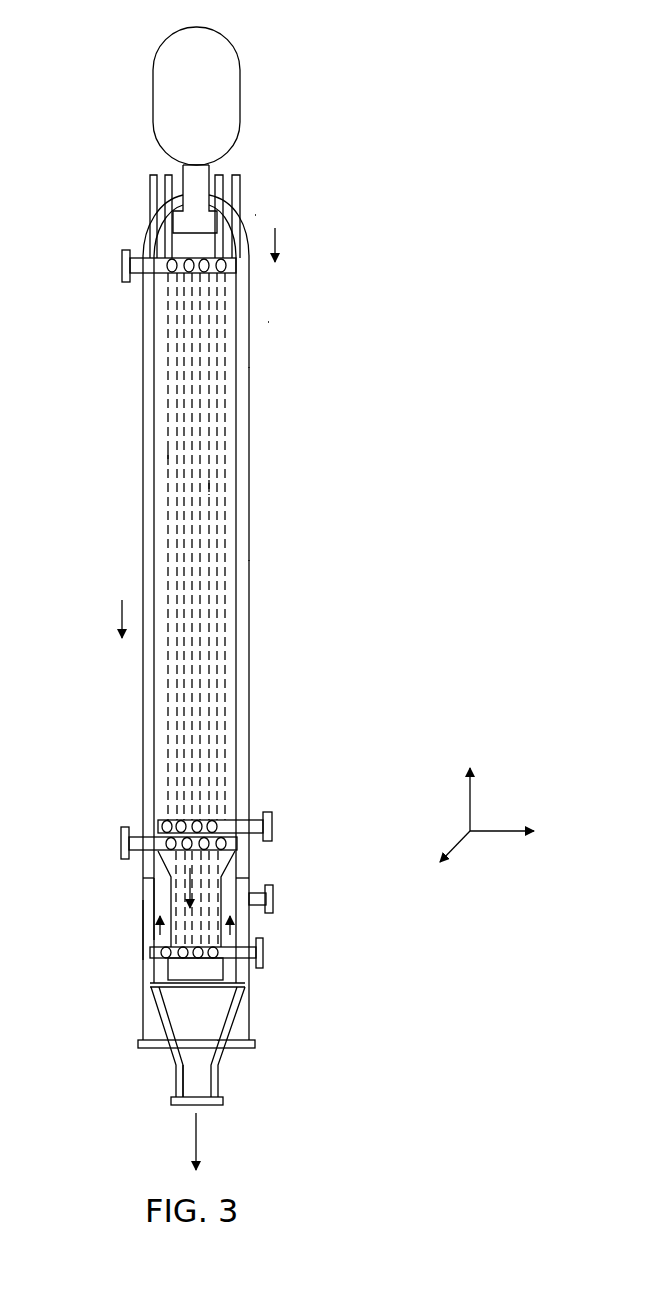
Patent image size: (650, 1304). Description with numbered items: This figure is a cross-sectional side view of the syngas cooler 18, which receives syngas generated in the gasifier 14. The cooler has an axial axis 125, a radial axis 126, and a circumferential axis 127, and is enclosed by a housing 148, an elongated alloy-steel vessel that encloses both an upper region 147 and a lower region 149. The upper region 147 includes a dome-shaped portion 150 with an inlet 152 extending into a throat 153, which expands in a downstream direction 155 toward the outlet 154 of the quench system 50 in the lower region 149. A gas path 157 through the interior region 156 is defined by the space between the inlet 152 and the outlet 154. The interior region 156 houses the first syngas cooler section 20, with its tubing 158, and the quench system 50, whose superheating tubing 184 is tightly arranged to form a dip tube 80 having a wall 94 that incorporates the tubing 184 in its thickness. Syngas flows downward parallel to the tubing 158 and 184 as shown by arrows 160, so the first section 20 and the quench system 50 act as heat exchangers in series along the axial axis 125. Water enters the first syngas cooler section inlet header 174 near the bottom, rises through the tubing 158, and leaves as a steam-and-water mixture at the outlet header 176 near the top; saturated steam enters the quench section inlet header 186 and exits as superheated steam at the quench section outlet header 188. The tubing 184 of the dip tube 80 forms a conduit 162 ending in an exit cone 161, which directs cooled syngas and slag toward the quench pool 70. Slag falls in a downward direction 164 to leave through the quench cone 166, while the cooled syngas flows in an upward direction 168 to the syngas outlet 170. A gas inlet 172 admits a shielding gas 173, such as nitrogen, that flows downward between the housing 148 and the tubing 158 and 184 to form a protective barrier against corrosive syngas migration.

The gasifier 14 is at (236, 42).
The syngas cooler 18 is at (138, 369).
The first syngas cooler section 20 is at (250, 546).
The quench system 50 is at (140, 1043).
The quench pool 70 is at (158, 993).
The dip tube 80 is at (150, 952).
The wall 94 is at (250, 905).
The axial axis 125 is at (472, 796).
The radial axis 126 is at (500, 838).
The circumferential axis 127 is at (458, 831).
The upper region 147 is at (270, 320).
The housing 148 is at (243, 367).
The lower region 149 is at (138, 879).
The dome-shaped portion 150 is at (136, 221).
The inlet 152 is at (200, 178).
The throat 153 is at (258, 214).
The outlet 154 is at (194, 1100).
The downstream direction 155 is at (278, 240).
The interior region 156 is at (227, 444).
The gas path 157 is at (210, 487).
The tubing 158 is at (170, 457).
The arrows 160 is at (118, 614).
The exit cone 161 is at (236, 860).
The conduit 162 is at (150, 940).
The downward direction 164 is at (200, 1132).
The quench cone 166 is at (228, 1056).
The upward direction 168 is at (264, 948).
The syngas outlet 170 is at (273, 889).
The gas inlet 172 is at (138, 206).
The shielding gas 173 is at (137, 242).
The first syngas cooler section inlet header 174 is at (273, 828).
The first syngas cooler section outlet header 176 is at (138, 282).
The tubing 184 is at (151, 890).
The quench section inlet header 186 is at (245, 975).
The quench section outlet header 188 is at (147, 836).